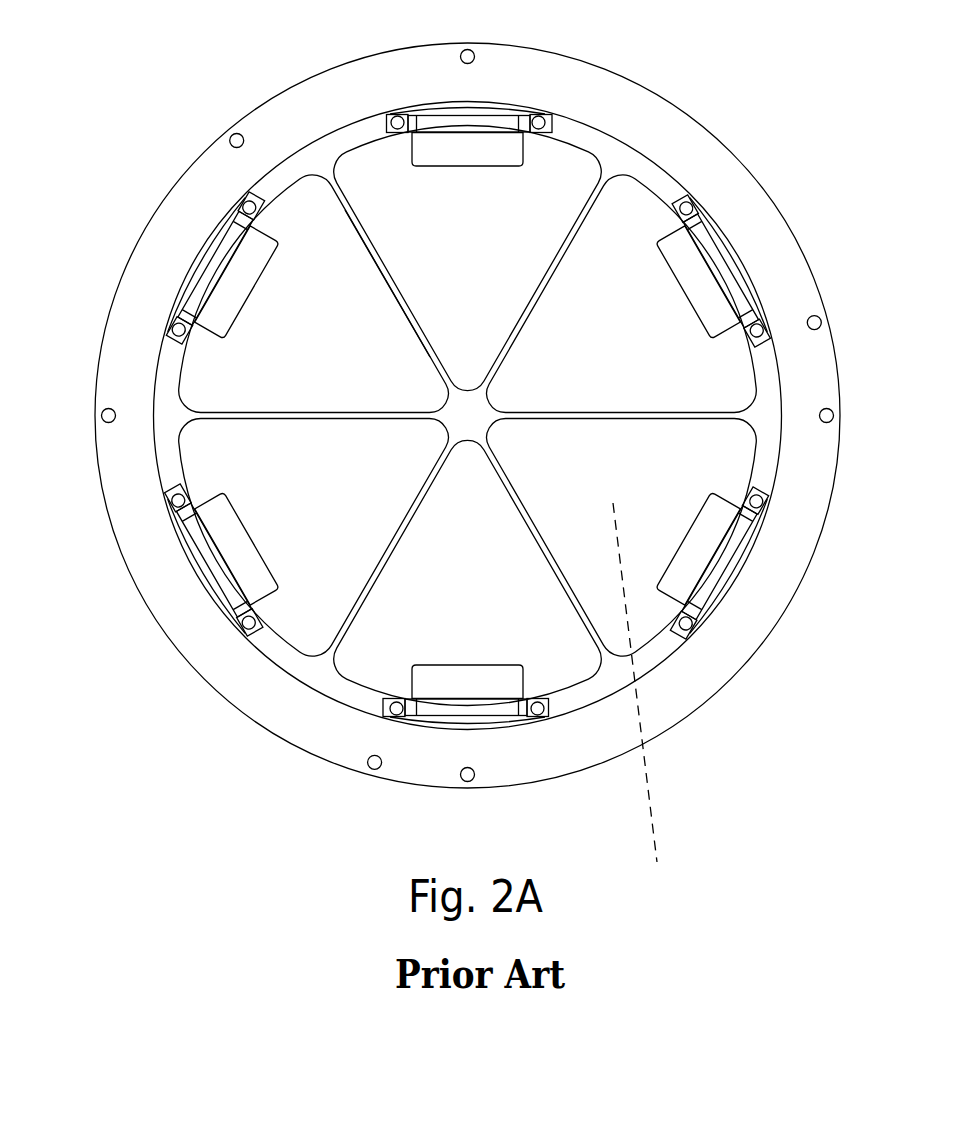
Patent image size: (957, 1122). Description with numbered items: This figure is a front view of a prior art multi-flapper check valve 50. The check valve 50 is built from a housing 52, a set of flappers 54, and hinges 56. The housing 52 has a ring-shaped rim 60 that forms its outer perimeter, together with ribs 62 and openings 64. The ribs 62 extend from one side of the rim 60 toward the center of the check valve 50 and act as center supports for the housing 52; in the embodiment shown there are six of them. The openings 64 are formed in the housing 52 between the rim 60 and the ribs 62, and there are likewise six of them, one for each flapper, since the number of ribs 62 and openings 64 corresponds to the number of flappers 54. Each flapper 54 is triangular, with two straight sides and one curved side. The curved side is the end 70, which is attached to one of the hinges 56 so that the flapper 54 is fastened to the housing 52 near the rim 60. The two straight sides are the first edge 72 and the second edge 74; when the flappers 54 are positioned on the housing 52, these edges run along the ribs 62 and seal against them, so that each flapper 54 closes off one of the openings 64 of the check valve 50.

The check valve 50 is at (148, 97).
The housing 52 is at (665, 130).
The flappers 54 is at (373, 168).
The hinges 56 is at (503, 113).
The rim 60 is at (747, 203).
The ribs 62 is at (392, 545).
The openings 64 is at (646, 703).
The end 70 is at (180, 362).
The first edge 72 is at (370, 262).
The second edge 74 is at (312, 412).